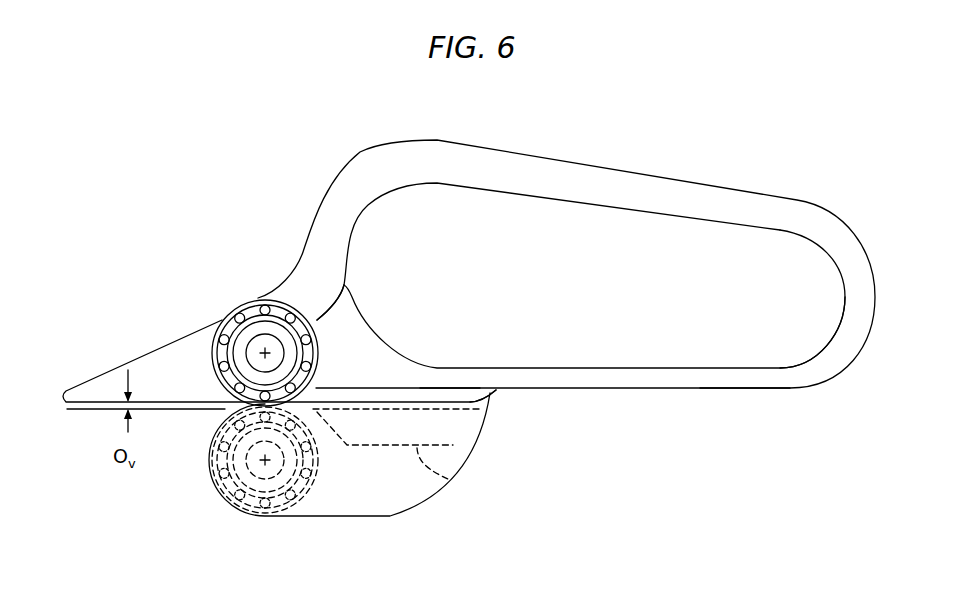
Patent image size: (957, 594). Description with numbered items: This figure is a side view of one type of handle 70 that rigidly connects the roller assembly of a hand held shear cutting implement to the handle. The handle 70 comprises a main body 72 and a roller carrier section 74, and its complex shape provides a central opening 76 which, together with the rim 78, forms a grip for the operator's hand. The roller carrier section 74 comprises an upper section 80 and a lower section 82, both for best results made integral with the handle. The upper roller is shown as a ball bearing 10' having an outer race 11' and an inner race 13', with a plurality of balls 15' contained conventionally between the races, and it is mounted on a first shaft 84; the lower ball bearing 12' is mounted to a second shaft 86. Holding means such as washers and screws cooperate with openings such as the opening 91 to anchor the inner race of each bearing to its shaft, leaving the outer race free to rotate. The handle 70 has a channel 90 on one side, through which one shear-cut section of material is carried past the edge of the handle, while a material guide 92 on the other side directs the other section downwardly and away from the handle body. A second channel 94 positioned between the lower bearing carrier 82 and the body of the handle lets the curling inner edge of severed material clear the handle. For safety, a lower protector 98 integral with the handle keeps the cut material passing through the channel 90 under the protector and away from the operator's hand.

The handle 70 is at (647, 155).
The main body 72 is at (316, 181).
The roller carrier section 74 is at (221, 275).
The central opening 76 is at (594, 287).
The rim 78 is at (863, 310).
The upper section 80 is at (191, 389).
The lower section 82 is at (398, 487).
The first shaft 84 is at (262, 336).
The second shaft 86 is at (210, 480).
The channel 90 is at (492, 393).
The opening 91 is at (438, 391).
The material guide 92 is at (450, 480).
The second channel 94 is at (377, 407).
The lower protector 98 is at (757, 380).
The ball bearing 10' is at (207, 363).
The outer race 11' is at (271, 429).
The lower ball bearing 12' is at (294, 545).
The inner race 13' is at (243, 435).
The balls 15' is at (353, 299).